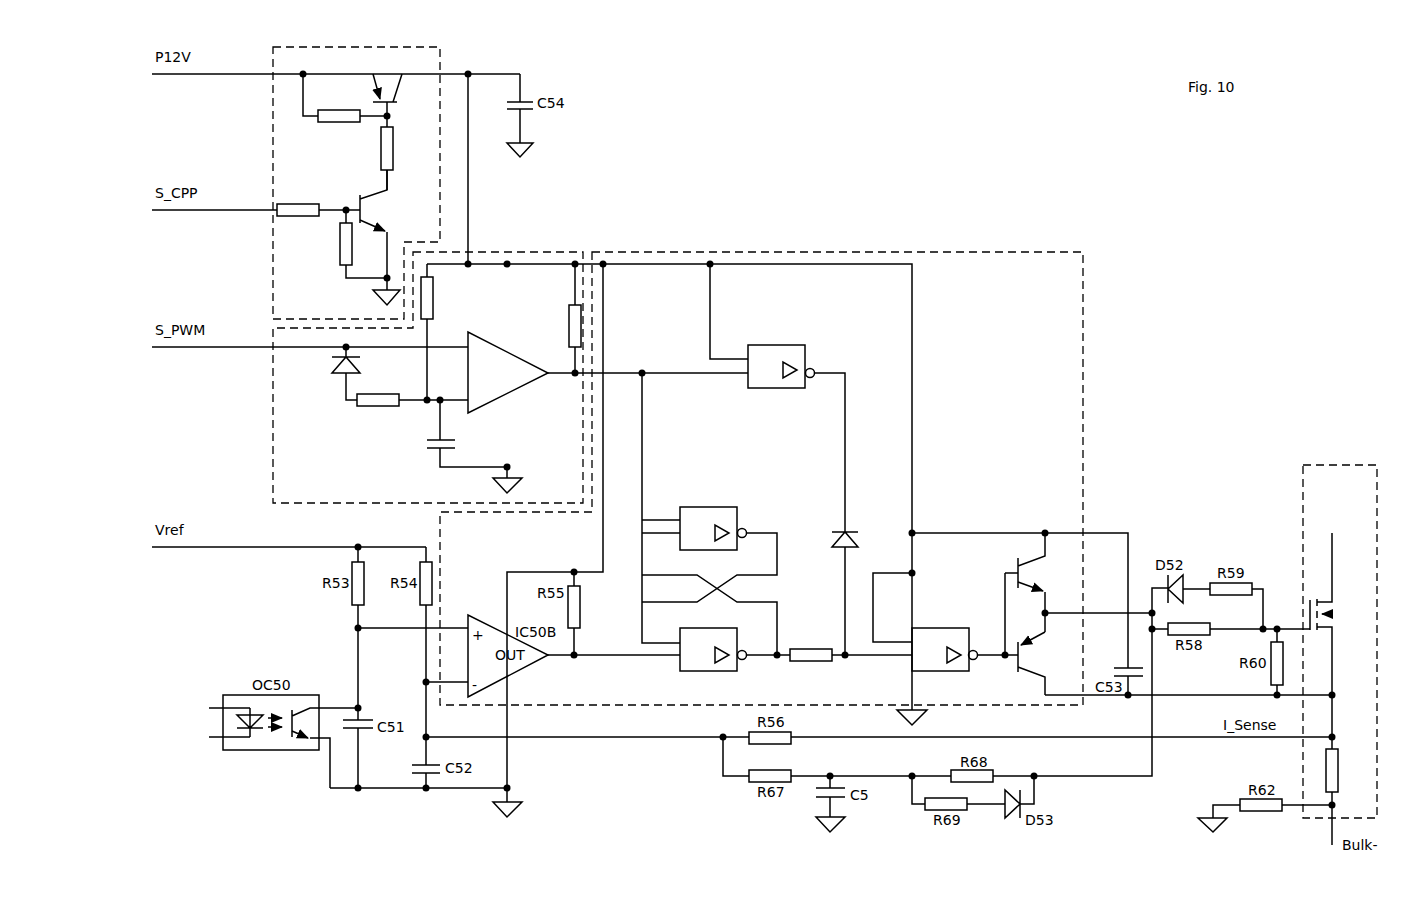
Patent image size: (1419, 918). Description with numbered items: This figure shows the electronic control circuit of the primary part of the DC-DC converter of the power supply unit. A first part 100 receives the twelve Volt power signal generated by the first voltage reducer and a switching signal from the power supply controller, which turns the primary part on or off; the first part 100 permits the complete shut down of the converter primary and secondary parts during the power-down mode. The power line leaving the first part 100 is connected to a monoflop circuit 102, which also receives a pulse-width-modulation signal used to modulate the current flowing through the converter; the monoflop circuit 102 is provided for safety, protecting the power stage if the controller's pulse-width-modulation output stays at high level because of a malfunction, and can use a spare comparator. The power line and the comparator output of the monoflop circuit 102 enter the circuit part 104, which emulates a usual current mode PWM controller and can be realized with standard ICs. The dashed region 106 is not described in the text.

The first part 100 is at (443, 60).
The monoflop circuit 102 is at (535, 249).
The circuit part 104 is at (763, 249).
The primary power path 106 is at (1334, 462).